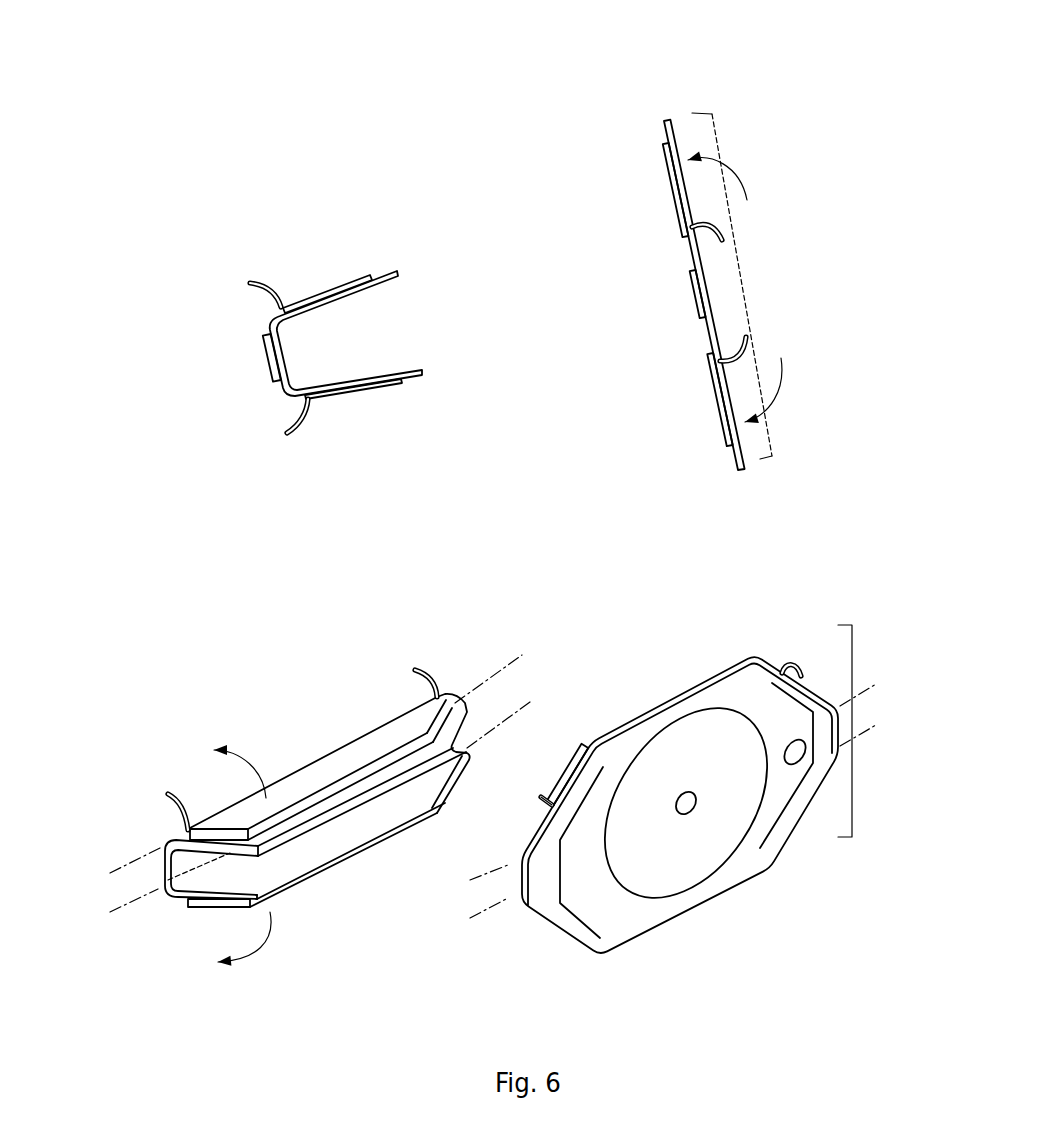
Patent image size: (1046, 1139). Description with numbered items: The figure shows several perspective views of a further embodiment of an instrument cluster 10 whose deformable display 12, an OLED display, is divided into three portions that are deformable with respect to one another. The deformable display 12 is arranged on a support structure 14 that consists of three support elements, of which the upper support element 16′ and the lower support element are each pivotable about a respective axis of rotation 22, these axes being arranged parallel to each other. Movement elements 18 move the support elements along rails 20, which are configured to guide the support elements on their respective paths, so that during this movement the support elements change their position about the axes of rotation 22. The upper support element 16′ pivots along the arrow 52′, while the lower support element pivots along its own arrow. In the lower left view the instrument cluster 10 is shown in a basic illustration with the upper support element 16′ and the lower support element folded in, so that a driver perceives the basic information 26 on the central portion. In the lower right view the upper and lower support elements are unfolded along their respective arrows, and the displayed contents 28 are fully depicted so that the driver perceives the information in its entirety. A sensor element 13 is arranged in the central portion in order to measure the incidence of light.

The instrument cluster 10 is at (258, 213).
The deformable display 12 is at (396, 284).
The sensor element 13 is at (794, 758).
The support structure 14 is at (329, 277).
The upper support element 16′ is at (356, 271).
The movement element 18 is at (296, 319).
The rail 20 is at (256, 281).
The axis of rotation 22 is at (264, 318).
The basic information 26 is at (288, 358).
The displayed contents 28 is at (746, 277).
The arrow for the upper support element 52′ is at (747, 200).